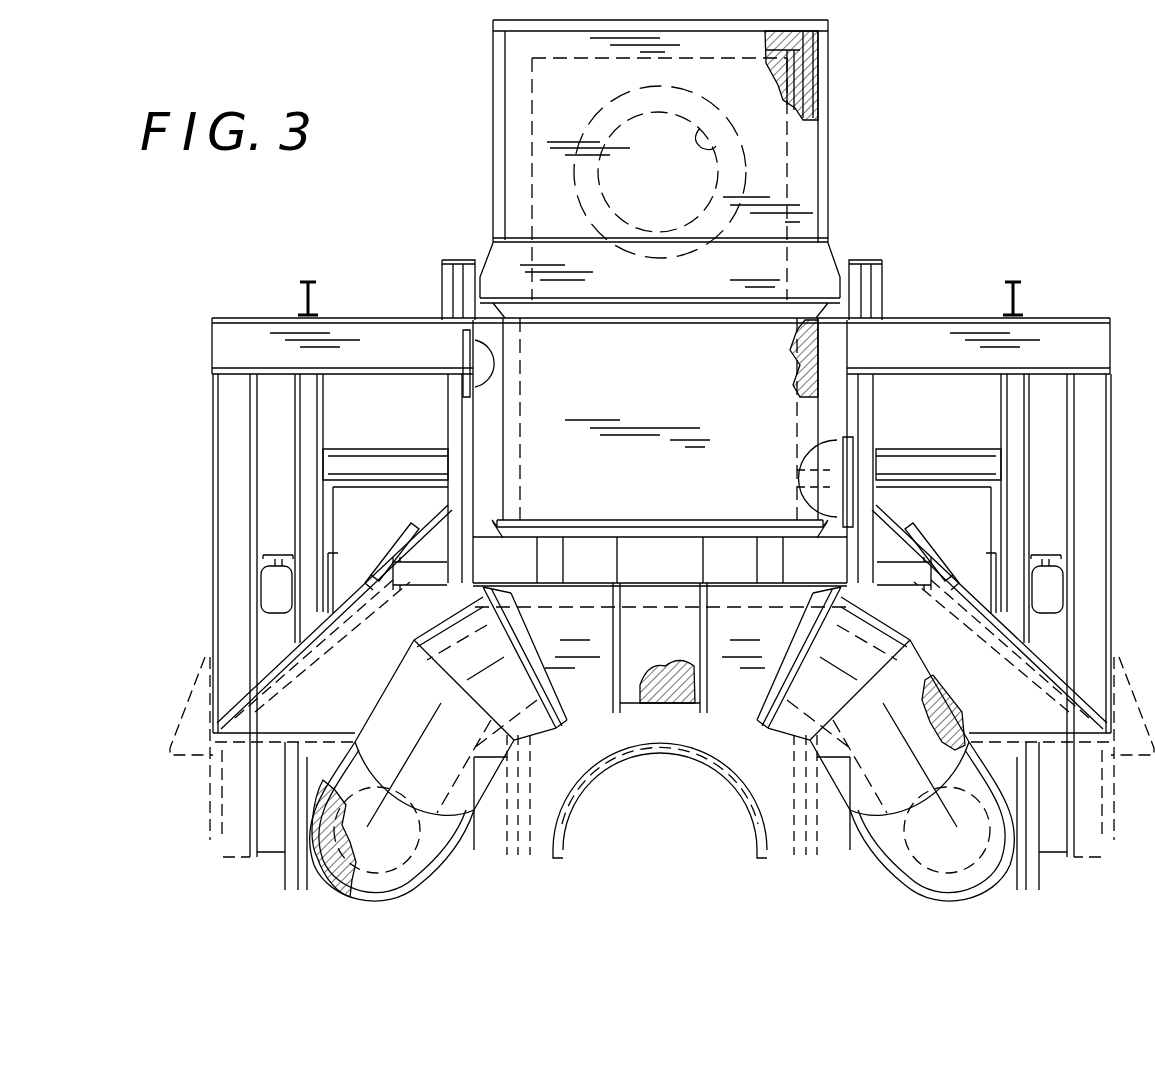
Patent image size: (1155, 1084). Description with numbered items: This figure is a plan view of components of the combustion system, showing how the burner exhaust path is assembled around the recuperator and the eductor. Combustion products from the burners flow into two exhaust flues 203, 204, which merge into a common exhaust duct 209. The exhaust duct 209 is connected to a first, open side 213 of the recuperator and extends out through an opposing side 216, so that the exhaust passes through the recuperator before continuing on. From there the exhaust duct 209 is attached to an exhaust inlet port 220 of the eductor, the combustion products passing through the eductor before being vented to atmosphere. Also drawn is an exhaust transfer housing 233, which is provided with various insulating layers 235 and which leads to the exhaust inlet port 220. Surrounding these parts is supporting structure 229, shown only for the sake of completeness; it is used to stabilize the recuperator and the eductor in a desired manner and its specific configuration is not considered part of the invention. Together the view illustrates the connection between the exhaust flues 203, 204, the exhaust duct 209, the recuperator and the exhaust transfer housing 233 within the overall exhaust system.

The exhaust flue 203 is at (432, 844).
The exhaust flue 204 is at (917, 879).
The exhaust duct 209 is at (660, 561).
The first open side 213 is at (653, 520).
The opposing side 216 is at (638, 320).
The exhaust inlet port 220 is at (722, 141).
The supporting structure 229 is at (1061, 319).
The exhaust transfer housing 233 is at (831, 108).
The insulating layers 235 is at (810, 53).